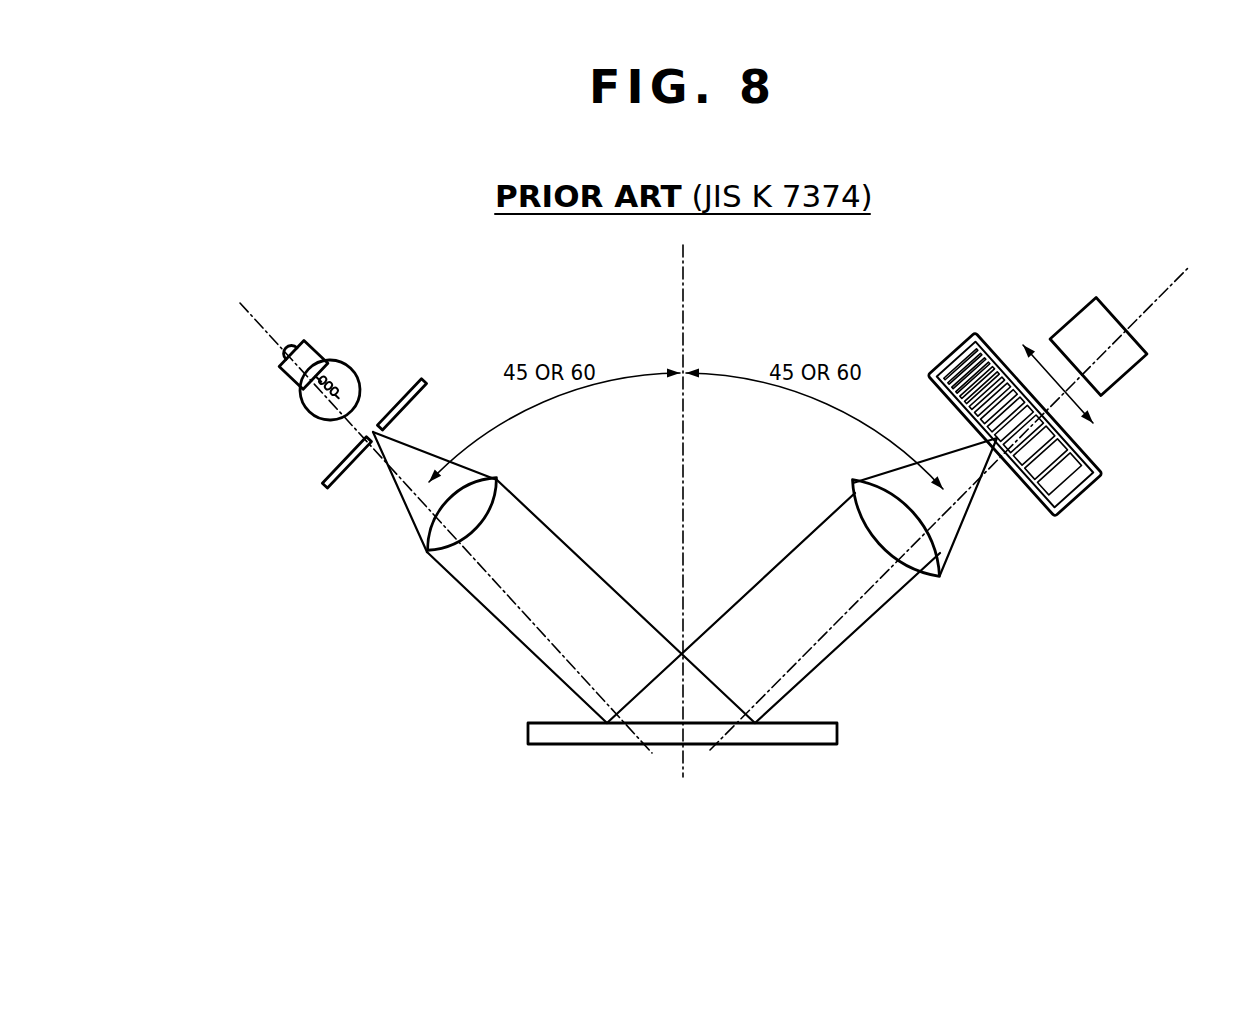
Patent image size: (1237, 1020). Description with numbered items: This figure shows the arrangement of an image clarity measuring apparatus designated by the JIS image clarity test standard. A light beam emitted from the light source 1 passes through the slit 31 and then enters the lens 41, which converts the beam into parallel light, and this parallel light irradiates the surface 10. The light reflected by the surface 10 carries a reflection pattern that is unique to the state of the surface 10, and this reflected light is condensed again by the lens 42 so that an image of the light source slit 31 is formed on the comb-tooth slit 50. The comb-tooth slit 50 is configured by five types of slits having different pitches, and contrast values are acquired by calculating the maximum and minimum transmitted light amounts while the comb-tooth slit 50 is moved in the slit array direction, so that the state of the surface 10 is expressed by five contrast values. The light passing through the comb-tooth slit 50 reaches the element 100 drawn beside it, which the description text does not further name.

The light source 1 is at (290, 381).
The slit 31 is at (325, 492).
The lens 41 is at (430, 532).
The lens 42 is at (945, 578).
The surface 10 is at (820, 722).
The comb-tooth slit 50 is at (1076, 505).
The light receiver 100 is at (1130, 378).